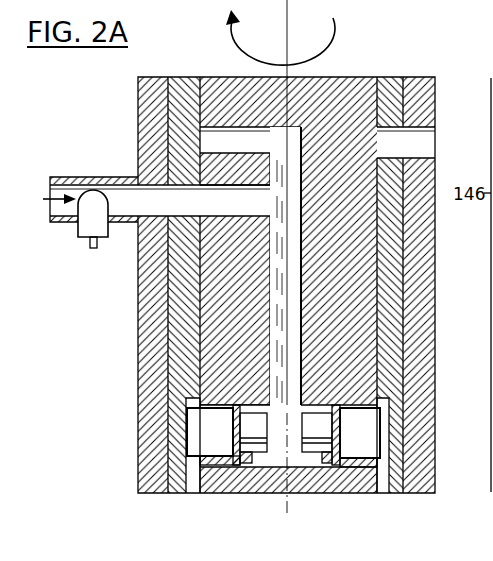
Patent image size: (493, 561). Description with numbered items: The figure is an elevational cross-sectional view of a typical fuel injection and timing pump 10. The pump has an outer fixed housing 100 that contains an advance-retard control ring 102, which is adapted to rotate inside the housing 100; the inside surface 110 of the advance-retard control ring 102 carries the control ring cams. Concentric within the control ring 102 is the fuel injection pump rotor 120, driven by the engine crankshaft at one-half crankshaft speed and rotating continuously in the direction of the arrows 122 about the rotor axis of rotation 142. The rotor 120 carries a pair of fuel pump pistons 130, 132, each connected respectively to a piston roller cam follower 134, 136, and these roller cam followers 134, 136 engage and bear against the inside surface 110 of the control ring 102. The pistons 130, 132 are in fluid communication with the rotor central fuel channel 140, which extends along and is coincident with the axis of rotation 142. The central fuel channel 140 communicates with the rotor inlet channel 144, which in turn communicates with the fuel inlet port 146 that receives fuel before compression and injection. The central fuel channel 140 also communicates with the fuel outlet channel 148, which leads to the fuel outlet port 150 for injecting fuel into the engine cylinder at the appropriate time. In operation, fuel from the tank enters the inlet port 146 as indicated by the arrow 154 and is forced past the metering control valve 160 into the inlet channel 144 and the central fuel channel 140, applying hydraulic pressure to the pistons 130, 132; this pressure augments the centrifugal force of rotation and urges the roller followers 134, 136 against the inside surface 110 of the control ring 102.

The fuel injection pump 10 is at (122, 101).
The outer fixed housing 100 is at (148, 297).
The advance-retard control ring 102 is at (192, 342).
The inside surface of advance-retard control ring 110 is at (203, 490).
The fuel injection pump rotor 120 is at (341, 86).
The arrows of rotor rotation 122 is at (337, 22).
The fuel pump piston 130 is at (311, 407).
The fuel pump piston 132 is at (258, 404).
The fuel injection pump piston roller cam follower 134 is at (377, 446).
The fuel injection pump piston roller cam follower 136 is at (230, 443).
The fuel injection pump rotor central fuel channel 140 is at (302, 296).
The rotor axis of rotation 142 is at (288, 508).
The fuel injection pump rotor inlet channel 144 is at (255, 210).
The fuel pump fuel inlet port 146 is at (134, 177).
The fuel injection pump fuel outlet channel 148 is at (254, 127).
The fuel pump fuel outlet port 150 is at (430, 130).
The arrow of fuel inlet flow 154 is at (44, 199).
The metering control valve 160 is at (88, 226).